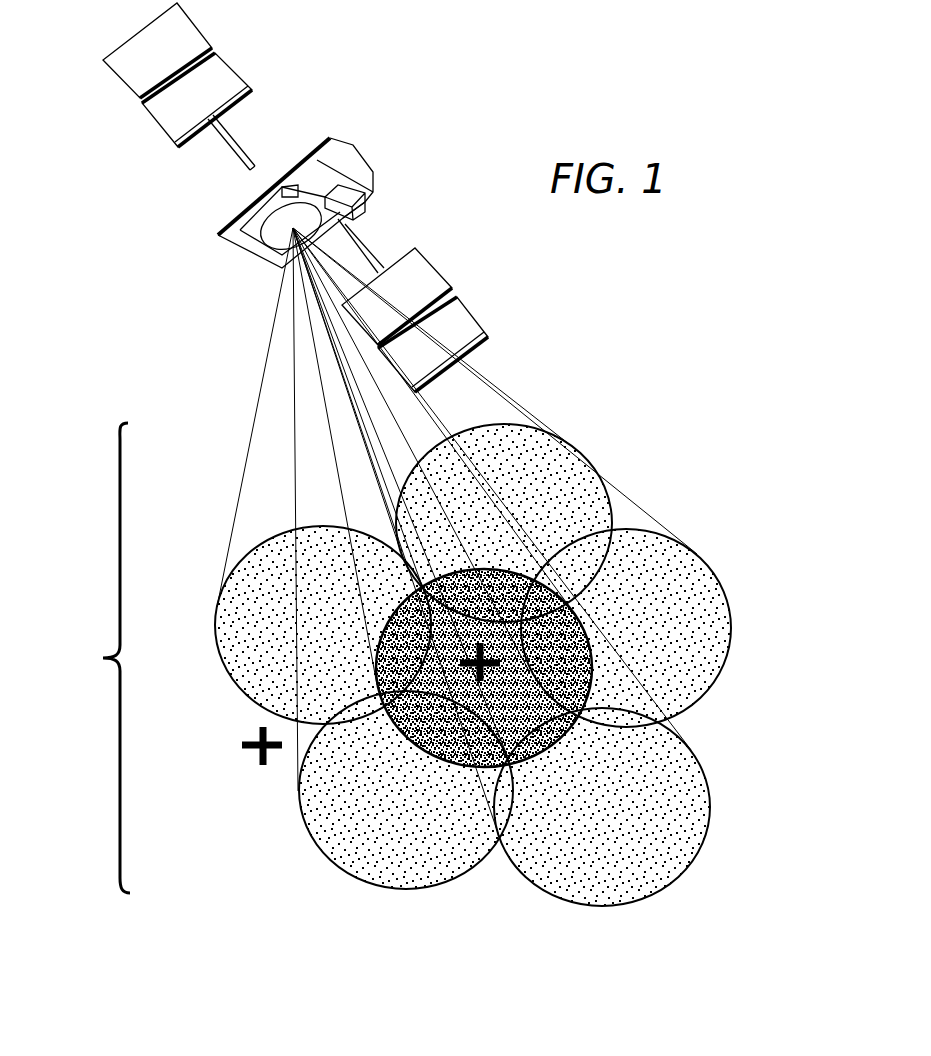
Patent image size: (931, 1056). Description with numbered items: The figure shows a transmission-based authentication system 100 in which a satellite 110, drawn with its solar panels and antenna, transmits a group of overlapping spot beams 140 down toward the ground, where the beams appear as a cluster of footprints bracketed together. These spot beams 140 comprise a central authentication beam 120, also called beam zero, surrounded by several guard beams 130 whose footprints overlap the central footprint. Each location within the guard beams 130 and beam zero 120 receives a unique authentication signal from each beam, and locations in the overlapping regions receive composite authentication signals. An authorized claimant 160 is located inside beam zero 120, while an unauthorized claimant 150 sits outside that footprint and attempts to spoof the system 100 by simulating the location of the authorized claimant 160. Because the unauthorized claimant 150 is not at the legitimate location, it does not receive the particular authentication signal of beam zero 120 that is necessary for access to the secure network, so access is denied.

The transmission-based authentication system 100 is at (386, 960).
The satellite 110 is at (200, 221).
The authentication beam 120 is at (515, 717).
The guard beam 130 is at (548, 500).
The overlapping spot beams 140 is at (438, 669).
The unauthorized claimant 150 is at (250, 760).
The authorized claimant 160 is at (493, 645).